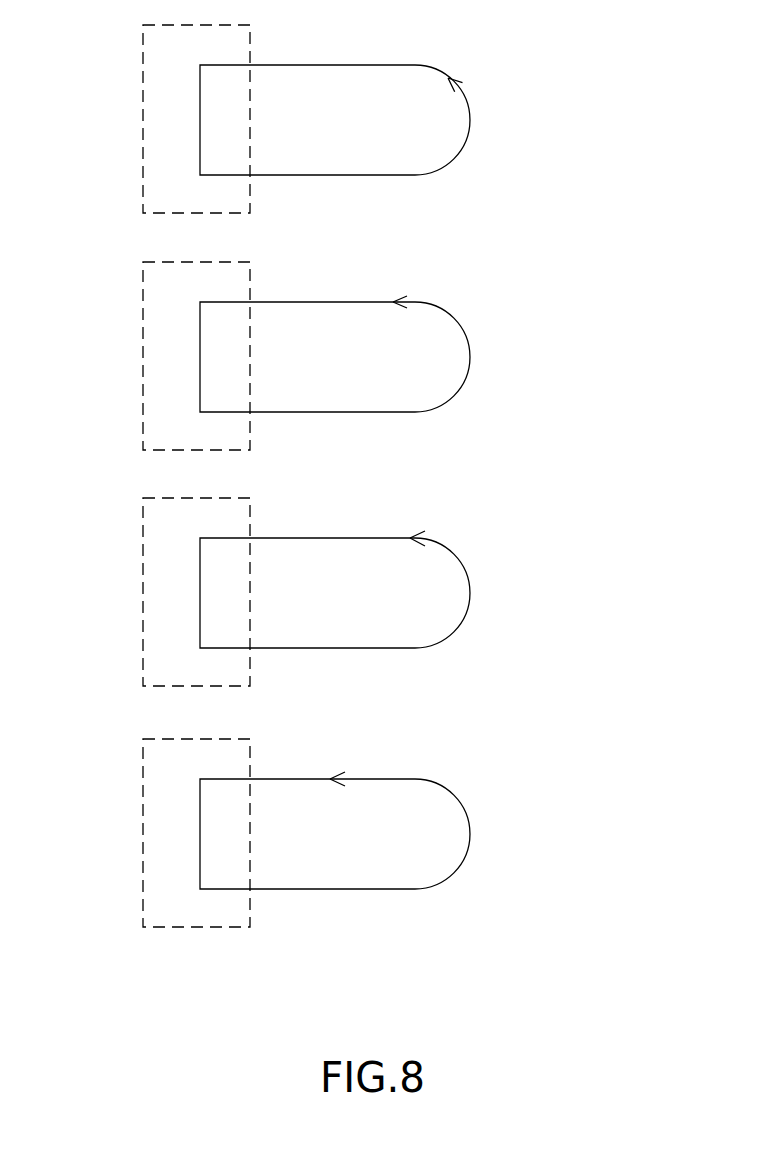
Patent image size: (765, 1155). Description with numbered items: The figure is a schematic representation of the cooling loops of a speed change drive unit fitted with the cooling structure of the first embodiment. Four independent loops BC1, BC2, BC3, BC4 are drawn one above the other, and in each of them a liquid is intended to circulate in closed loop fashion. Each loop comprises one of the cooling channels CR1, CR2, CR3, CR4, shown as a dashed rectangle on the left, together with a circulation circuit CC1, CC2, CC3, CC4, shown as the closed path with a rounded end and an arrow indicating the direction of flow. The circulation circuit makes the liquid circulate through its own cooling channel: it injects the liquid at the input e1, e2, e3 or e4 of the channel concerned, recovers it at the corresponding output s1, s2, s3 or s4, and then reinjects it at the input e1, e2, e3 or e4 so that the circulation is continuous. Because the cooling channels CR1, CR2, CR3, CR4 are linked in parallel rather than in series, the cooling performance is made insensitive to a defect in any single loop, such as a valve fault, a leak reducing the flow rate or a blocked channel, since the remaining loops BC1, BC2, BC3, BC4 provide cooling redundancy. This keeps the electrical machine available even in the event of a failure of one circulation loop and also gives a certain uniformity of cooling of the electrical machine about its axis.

The cooling channel CR1 is at (200, 118).
The cooling channel CR2 is at (150, 356).
The cooling channel CR3 is at (150, 592).
The cooling channel CR4 is at (150, 833).
The circulation circuit CC1 is at (368, 65).
The circulation circuit CC2 is at (335, 332).
The circulation circuit CC3 is at (335, 568).
The circulation circuit CC4 is at (335, 809).
The input e1 is at (250, 65).
The input e2 is at (280, 274).
The input e3 is at (280, 510).
The input e4 is at (280, 751).
The output s1 is at (250, 175).
The output s2 is at (285, 432).
The output s3 is at (285, 668).
The output s4 is at (285, 909).
The cooling loop BC1 is at (516, 117).
The cooling loop BC2 is at (419, 357).
The cooling loop BC3 is at (419, 593).
The cooling loop BC4 is at (419, 834).